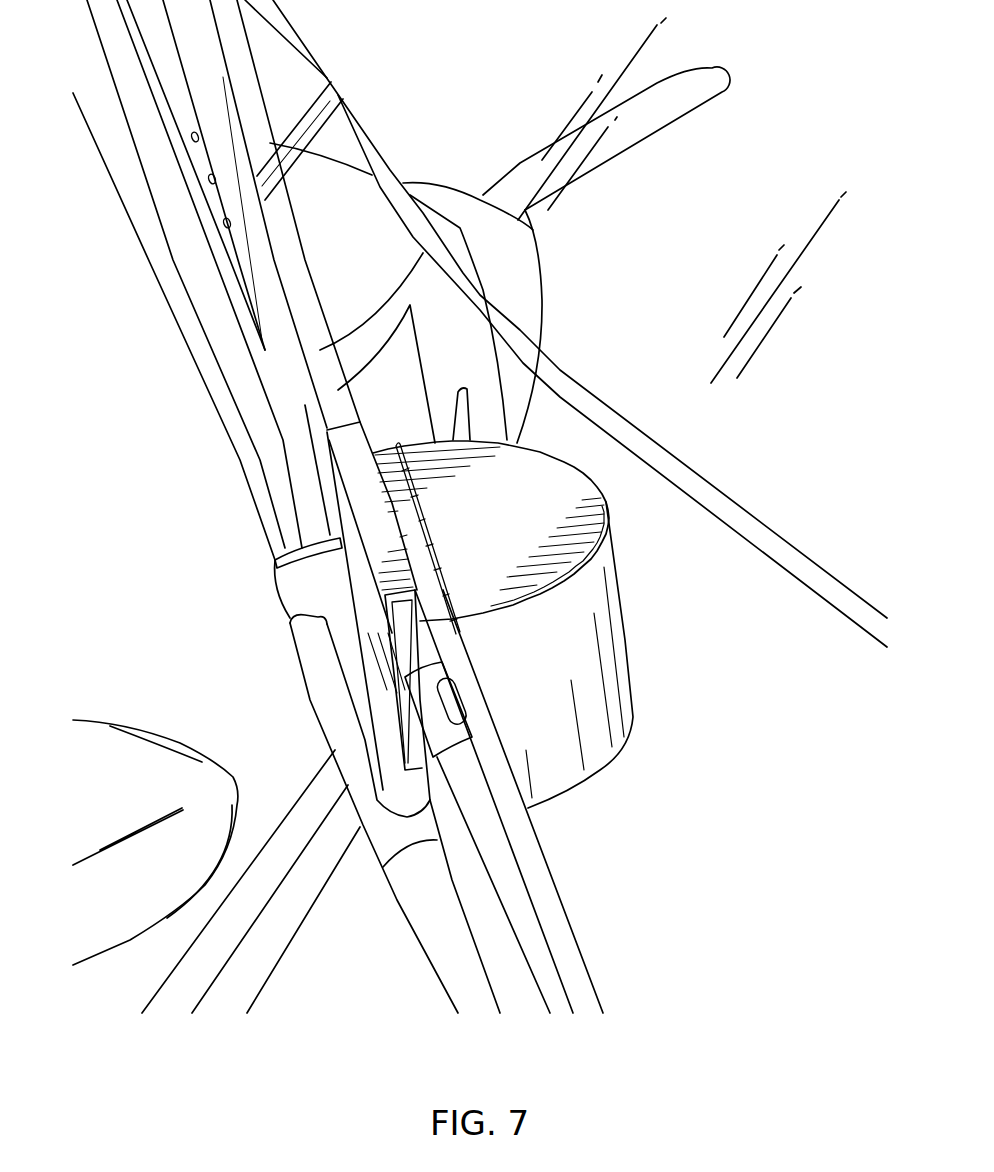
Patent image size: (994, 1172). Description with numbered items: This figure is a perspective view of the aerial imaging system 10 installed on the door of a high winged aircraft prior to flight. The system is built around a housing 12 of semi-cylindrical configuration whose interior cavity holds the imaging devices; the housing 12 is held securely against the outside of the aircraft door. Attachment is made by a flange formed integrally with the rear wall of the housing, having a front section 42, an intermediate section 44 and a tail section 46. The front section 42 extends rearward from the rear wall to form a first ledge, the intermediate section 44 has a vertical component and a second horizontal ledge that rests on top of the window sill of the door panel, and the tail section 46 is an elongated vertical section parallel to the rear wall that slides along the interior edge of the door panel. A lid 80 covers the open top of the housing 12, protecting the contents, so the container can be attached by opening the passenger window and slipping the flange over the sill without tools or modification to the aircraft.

The aerial imaging system 10 is at (580, 445).
The housing 12 is at (591, 670).
The front section 42 is at (410, 523).
The intermediate section 44 is at (347, 445).
The tail section 46 is at (375, 612).
The lid 80 is at (539, 497).